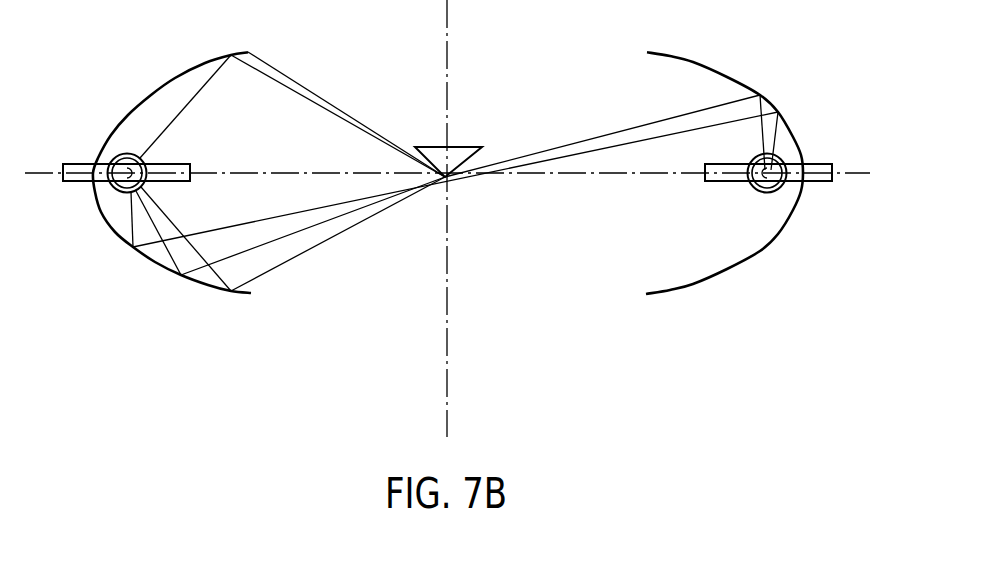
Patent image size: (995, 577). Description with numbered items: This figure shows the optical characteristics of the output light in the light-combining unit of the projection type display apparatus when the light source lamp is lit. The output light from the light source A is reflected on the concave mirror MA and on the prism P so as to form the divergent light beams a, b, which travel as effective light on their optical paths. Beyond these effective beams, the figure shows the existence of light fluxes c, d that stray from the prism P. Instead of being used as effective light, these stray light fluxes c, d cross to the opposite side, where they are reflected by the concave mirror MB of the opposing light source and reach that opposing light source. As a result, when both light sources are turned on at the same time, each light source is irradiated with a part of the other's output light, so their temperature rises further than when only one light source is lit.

The concave mirror MA is at (162, 172).
The concave mirror MB is at (731, 173).
The light source A is at (126, 155).
The prism P is at (458, 147).
The divergent light beam a is at (428, 167).
The divergent light beam b is at (440, 177).
The light flux c is at (652, 127).
The light flux d is at (680, 135).